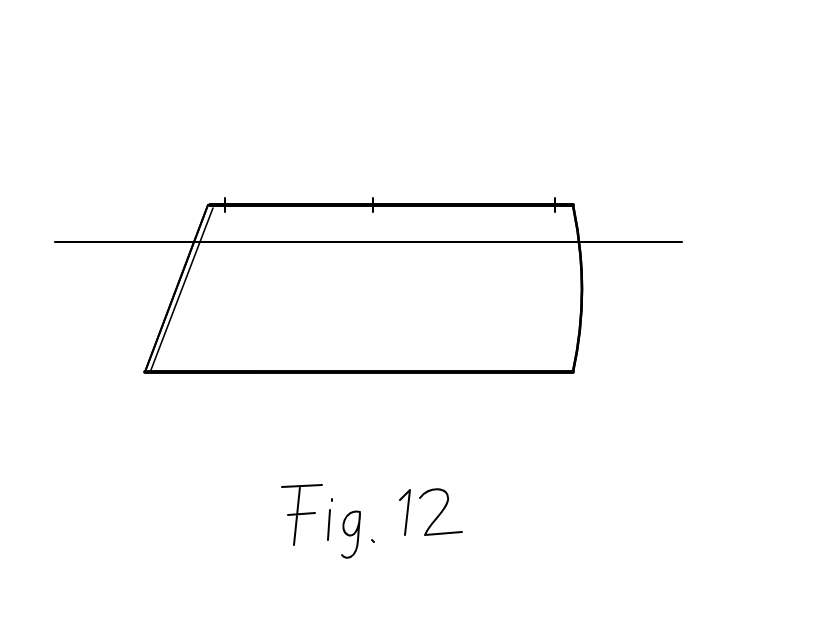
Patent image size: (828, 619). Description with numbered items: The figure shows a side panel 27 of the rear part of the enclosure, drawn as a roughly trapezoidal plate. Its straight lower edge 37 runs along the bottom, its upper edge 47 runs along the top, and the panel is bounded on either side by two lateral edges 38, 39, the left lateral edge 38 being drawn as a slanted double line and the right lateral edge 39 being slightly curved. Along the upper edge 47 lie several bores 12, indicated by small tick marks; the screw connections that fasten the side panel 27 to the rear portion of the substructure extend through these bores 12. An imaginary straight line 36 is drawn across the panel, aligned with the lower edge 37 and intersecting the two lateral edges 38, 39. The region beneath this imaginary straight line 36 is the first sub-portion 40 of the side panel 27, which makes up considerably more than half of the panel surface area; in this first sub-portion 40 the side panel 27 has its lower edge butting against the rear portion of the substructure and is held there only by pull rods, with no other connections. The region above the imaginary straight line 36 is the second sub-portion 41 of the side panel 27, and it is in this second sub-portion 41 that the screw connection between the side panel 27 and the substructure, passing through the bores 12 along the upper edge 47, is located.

The bore 12 is at (133, 155).
The side panel 27 is at (510, 160).
The imaginary straight line 36 is at (660, 198).
The lower edge 37 is at (205, 372).
The lateral edge 38 is at (178, 292).
The lateral edge 39 is at (630, 306).
The first sub-portion 40 is at (500, 405).
The second sub-portion 41 is at (253, 232).
The upper edge 47 is at (310, 205).